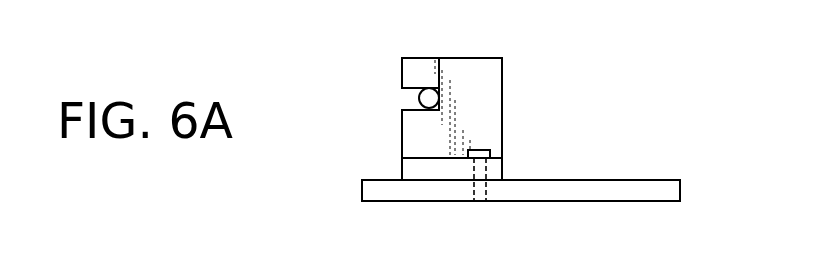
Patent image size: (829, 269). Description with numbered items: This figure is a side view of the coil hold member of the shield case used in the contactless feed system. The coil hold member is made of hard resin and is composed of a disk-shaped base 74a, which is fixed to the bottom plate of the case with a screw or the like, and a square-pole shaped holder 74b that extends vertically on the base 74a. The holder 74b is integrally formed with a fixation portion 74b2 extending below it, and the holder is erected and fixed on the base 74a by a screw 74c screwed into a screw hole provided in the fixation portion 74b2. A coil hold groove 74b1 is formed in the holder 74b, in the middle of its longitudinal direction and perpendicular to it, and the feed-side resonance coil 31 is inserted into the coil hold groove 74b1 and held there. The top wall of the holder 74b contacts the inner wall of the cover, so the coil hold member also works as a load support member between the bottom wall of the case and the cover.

The base 74a is at (663, 190).
The holder 74b is at (490, 66).
The coil hold groove 74b1 is at (408, 85).
The fixation portion 74b2 is at (442, 167).
The screw 74c is at (488, 148).
The feed-side resonance coil 31 is at (418, 100).